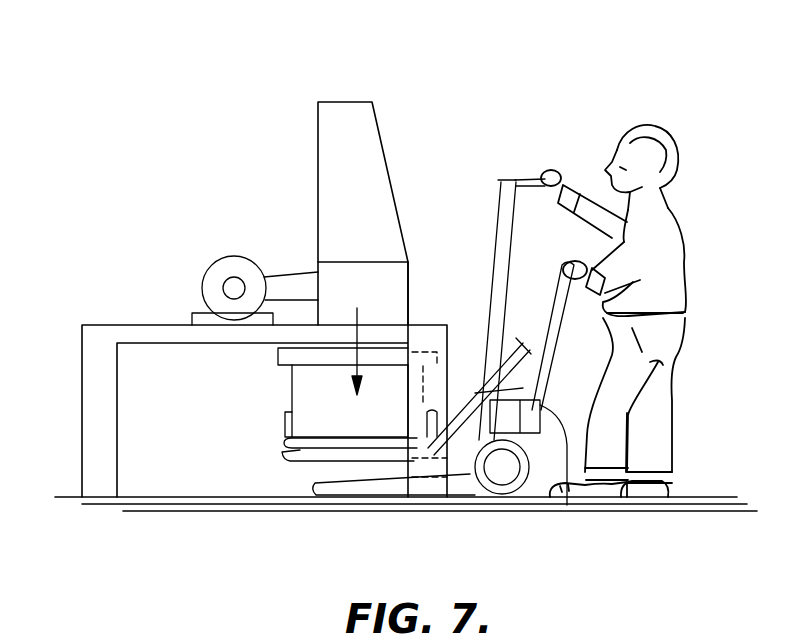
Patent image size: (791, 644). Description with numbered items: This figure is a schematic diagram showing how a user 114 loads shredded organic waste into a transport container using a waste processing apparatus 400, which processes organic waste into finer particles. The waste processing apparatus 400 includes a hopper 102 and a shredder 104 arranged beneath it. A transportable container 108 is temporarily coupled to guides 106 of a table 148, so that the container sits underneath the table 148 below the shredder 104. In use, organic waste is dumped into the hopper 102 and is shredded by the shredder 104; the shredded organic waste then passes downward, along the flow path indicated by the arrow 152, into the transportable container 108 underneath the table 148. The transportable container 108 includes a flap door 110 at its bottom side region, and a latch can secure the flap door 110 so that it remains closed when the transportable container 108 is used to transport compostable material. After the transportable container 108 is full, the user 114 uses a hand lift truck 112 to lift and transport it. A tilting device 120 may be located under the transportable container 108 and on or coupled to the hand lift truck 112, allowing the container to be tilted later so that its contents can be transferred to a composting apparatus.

The waste processing apparatus 400 is at (355, 77).
The hopper 102 is at (358, 190).
The shredder 104 is at (390, 293).
The material flow path 152 is at (357, 335).
The table 148 is at (140, 325).
The guides 106 is at (253, 352).
The transportable container 108 is at (284, 397).
The flap door 110 is at (281, 427).
The hand lift truck 112 is at (498, 497).
The user 114 is at (683, 330).
The tilting device 120 is at (563, 482).